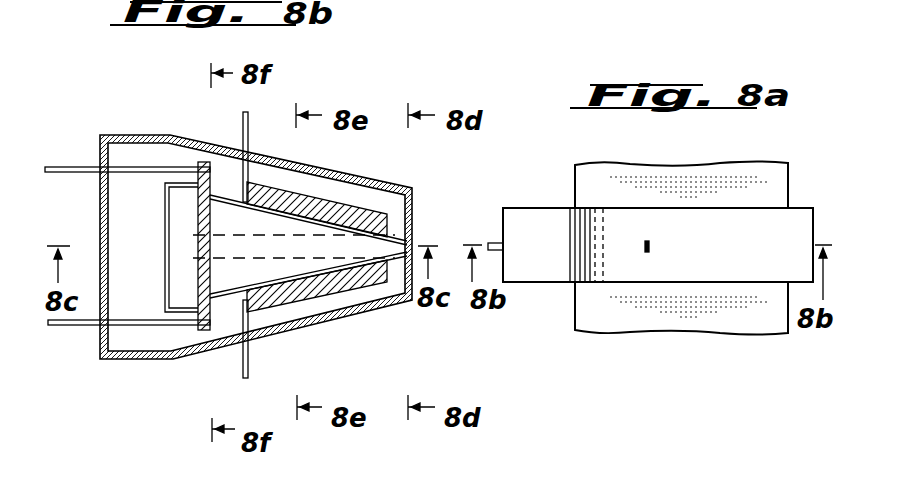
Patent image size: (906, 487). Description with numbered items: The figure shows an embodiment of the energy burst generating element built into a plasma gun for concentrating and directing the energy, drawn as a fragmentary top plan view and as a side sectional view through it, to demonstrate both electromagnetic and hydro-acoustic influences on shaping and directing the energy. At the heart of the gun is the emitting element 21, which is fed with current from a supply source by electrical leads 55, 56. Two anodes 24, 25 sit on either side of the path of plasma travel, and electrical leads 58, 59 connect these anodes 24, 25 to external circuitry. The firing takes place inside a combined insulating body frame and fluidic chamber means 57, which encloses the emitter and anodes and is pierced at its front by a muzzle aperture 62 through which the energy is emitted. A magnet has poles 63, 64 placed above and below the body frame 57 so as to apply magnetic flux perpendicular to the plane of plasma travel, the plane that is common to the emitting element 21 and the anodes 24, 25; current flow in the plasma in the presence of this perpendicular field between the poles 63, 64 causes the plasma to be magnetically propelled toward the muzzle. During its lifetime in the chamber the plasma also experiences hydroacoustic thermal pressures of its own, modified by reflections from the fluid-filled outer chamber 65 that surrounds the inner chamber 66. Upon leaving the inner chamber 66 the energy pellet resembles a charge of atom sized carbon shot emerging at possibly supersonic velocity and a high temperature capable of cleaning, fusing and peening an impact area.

In FIG. 8B, the emitting element 21 is at (203, 333).
In FIG. 8B, the anode 24 is at (345, 200).
In FIG. 8B, the anode 25 is at (353, 287).
In FIG. 8B, the electrical lead 55 is at (72, 145).
In FIG. 8A, the electrical lead 55 is at (493, 241).
In FIG. 8B, the electrical lead 56 is at (85, 325).
In FIG. 8B, the combined insulating body frame and fluidic chamber means 57 is at (410, 188).
In FIG. 8A, the combined insulating body frame and fluidic chamber means 57 is at (543, 217).
In FIG. 8B, the electrical lead 58 is at (243, 121).
In FIG. 8A, the electrical lead 58 is at (649, 246).
In FIG. 8B, the electrical lead 59 is at (250, 373).
In FIG. 8B, the muzzle aperture 62 is at (400, 248).
In FIG. 8A, the magnet pole 63 is at (693, 155).
In FIG. 8A, the magnet pole 64 is at (740, 323).
In FIG. 8B, the fluid-filled outer chamber 65 is at (163, 340).
In FIG. 8B, the inner chamber 66 is at (280, 272).